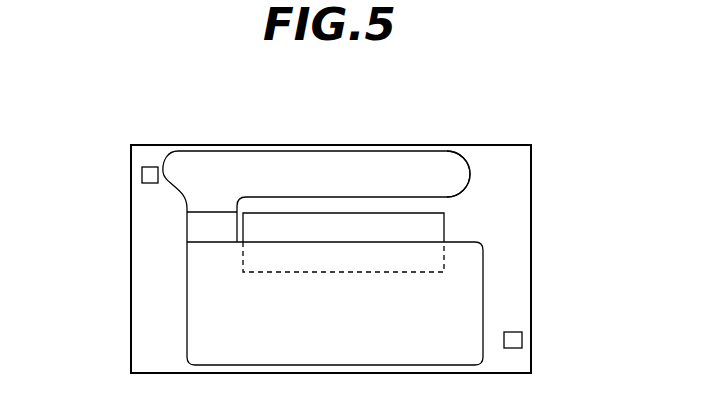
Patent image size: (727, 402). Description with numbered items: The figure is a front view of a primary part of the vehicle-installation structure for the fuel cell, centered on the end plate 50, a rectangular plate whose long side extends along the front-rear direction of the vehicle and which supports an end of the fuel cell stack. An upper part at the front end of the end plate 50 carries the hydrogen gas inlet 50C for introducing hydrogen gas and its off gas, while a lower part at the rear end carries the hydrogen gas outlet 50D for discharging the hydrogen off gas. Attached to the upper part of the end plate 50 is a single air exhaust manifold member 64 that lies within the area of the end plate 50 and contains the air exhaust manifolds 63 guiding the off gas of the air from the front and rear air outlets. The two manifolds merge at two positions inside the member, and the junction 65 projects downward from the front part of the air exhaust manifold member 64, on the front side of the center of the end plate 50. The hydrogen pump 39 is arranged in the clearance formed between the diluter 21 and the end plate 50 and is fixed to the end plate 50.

The end plate 50 is at (520, 172).
The hydrogen gas inlet 50C is at (147, 174).
The hydrogen gas outlet 50D is at (517, 340).
The air exhaust manifold 63 is at (178, 172).
The air exhaust manifold member 64 is at (470, 167).
The junction 65 is at (208, 213).
The hydrogen pump 39 is at (444, 228).
The diluter 21 is at (187, 327).